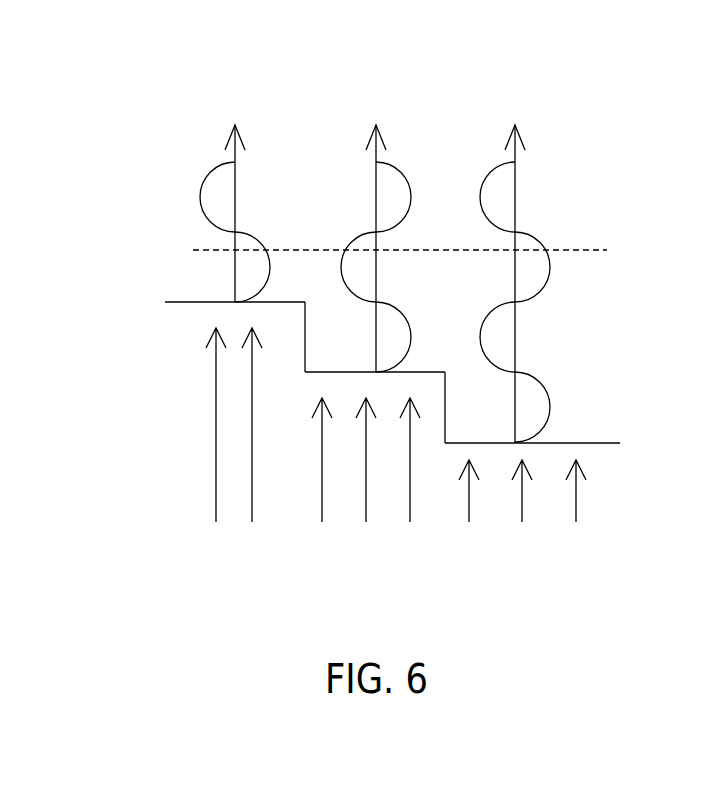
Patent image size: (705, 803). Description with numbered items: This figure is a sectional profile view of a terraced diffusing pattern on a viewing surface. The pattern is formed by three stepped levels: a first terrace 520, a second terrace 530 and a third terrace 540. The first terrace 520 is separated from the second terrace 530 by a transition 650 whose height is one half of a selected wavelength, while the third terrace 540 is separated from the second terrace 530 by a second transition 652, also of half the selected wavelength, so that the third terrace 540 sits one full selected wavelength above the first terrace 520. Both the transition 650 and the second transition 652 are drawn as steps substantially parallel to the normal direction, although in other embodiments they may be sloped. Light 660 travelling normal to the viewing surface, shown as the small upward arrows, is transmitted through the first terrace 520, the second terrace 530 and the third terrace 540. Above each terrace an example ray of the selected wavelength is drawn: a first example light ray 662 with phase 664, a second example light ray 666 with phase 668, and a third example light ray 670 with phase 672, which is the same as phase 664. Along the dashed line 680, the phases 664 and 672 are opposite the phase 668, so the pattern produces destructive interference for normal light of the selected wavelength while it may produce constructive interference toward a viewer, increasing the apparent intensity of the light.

The first terrace 520 is at (582, 443).
The second terrace 530 is at (347, 372).
The third terrace 540 is at (187, 303).
The transition 650 is at (442, 422).
The second transition 652 is at (305, 320).
The light 660 is at (217, 475).
The first example light ray 662 is at (518, 153).
The phase 664 is at (530, 237).
The second example light ray 666 is at (378, 152).
The phase 668 is at (408, 177).
The third example light ray 670 is at (235, 158).
The phase 672 is at (202, 185).
The dashed line 680 is at (593, 250).